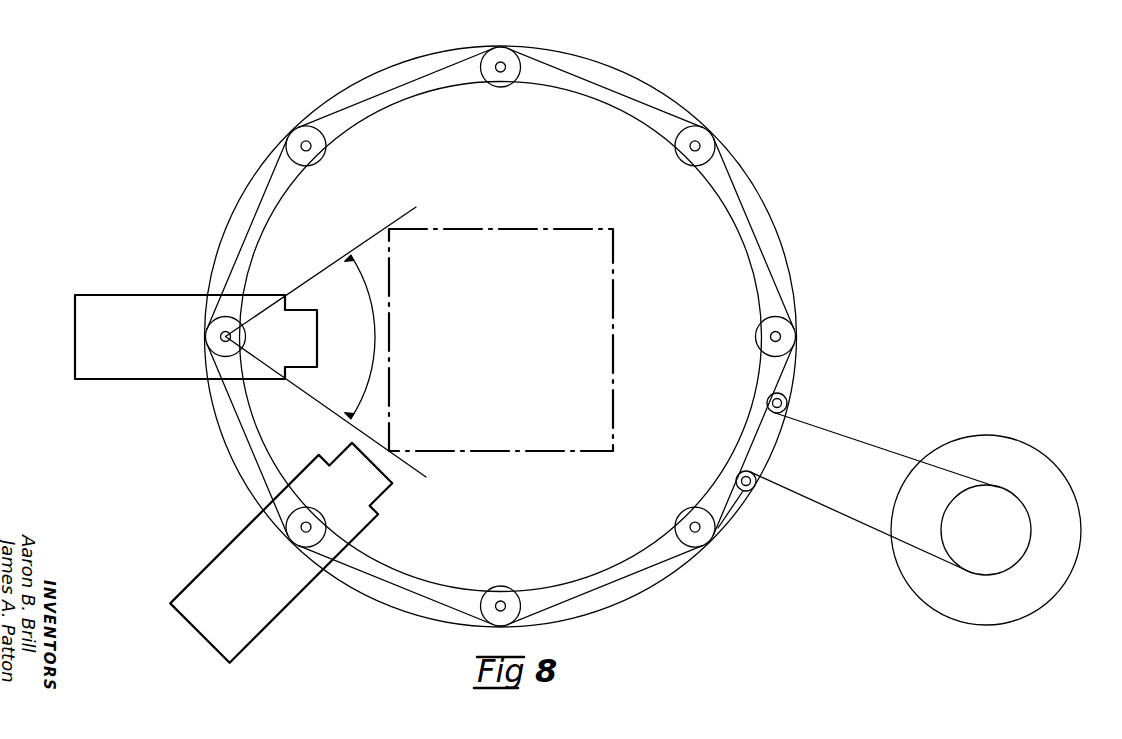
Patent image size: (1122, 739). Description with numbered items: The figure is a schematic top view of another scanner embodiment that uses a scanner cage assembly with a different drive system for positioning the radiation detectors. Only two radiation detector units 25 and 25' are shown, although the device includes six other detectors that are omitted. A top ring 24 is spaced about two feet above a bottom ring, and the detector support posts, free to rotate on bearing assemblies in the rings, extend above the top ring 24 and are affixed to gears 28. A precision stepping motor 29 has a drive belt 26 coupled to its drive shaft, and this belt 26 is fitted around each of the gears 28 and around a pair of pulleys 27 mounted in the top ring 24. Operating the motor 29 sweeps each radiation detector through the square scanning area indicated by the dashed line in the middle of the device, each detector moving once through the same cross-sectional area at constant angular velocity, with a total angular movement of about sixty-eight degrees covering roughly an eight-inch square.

The top ring 24 is at (758, 193).
The radiation detector unit 25 is at (162, 337).
The radiation detector unit 25' is at (285, 547).
The drive belt 26 is at (847, 433).
The pulleys 27 is at (790, 398).
The gears 28 is at (505, 80).
The precision stepping motor 29 is at (992, 448).